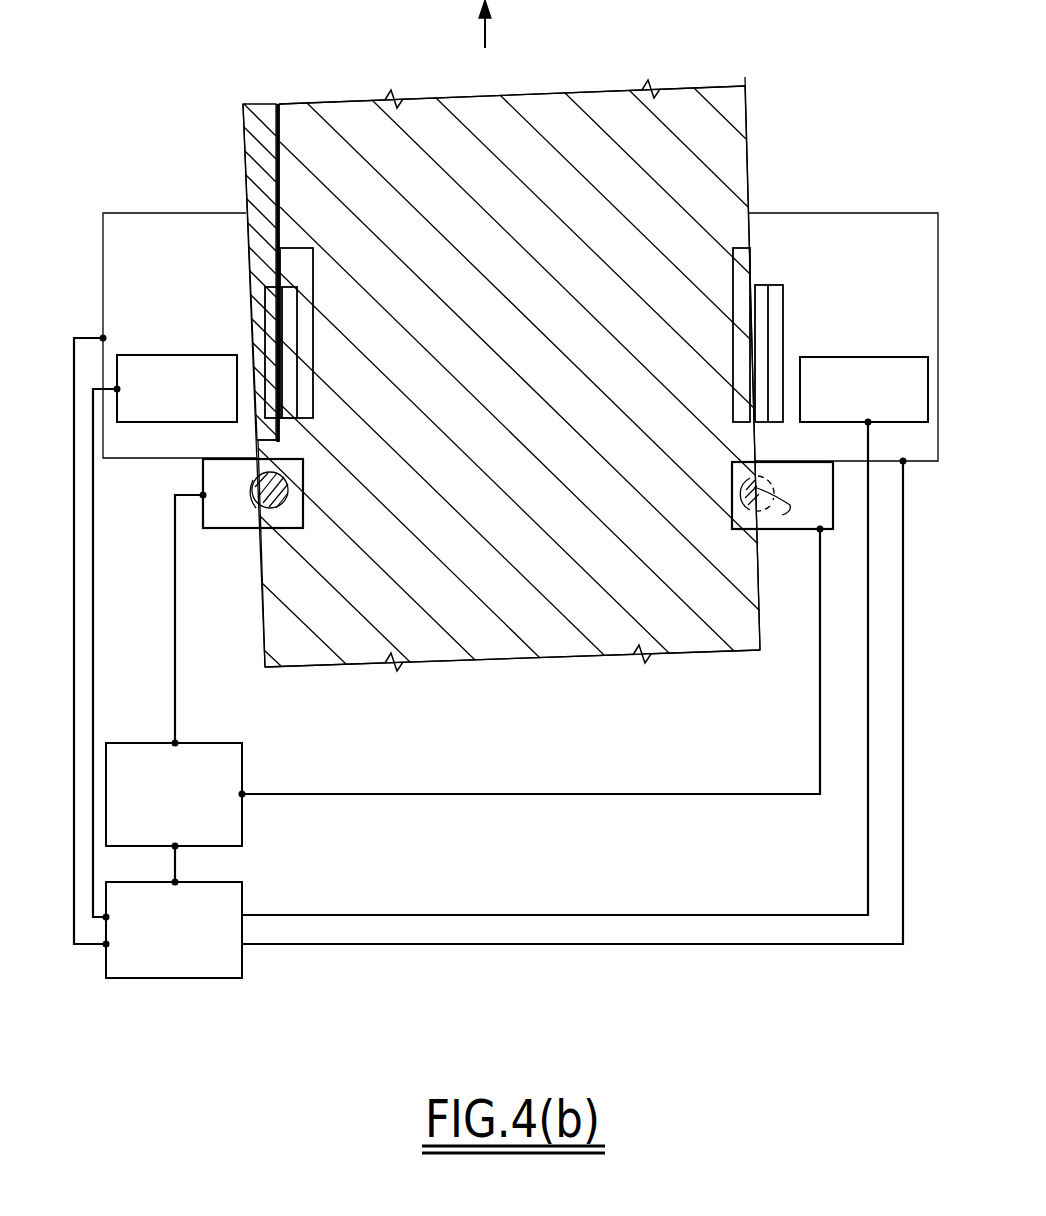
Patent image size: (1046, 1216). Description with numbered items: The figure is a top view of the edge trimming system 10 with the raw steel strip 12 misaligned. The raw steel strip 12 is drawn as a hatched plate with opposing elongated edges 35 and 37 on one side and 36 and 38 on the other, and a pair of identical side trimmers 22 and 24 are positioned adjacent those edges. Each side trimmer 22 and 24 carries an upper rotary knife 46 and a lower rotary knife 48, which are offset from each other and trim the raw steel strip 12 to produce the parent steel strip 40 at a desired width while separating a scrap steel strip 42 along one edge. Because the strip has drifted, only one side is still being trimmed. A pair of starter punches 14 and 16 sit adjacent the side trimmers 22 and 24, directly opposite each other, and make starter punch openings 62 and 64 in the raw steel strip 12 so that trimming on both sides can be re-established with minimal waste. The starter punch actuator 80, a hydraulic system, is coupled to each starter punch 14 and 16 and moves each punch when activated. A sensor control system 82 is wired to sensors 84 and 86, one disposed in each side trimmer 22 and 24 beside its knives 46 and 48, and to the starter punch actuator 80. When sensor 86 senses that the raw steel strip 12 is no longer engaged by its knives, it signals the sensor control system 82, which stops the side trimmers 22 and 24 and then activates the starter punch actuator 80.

The edge trimming system 10 is at (135, 96).
The raw steel strip 12 is at (615, 640).
The starter punch 14 is at (216, 473).
The starter punch 16 is at (831, 501).
The side trimmer 22 is at (175, 314).
The side trimmer 24 is at (899, 314).
The elongated edge 35 is at (263, 614).
The elongated edge 36 is at (279, 116).
The elongated edge 37 is at (760, 631).
The elongated edge 38 is at (761, 125).
The parent steel strip 40 is at (489, 110).
The scrap steel strip 42 is at (250, 136).
The upper rotary knife 46 is at (272, 298).
The lower rotary knife 48 is at (290, 322).
The starter punch opening 62 is at (252, 482).
The starter punch opening 64 is at (783, 500).
The starter punch actuator 80 is at (233, 826).
The sensor control system 82 is at (234, 898).
The sensor 84 is at (194, 418).
The sensor 86 is at (884, 418).